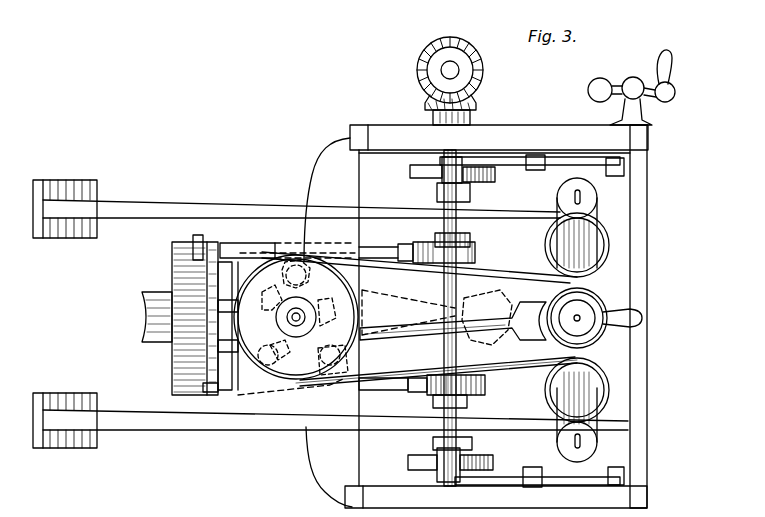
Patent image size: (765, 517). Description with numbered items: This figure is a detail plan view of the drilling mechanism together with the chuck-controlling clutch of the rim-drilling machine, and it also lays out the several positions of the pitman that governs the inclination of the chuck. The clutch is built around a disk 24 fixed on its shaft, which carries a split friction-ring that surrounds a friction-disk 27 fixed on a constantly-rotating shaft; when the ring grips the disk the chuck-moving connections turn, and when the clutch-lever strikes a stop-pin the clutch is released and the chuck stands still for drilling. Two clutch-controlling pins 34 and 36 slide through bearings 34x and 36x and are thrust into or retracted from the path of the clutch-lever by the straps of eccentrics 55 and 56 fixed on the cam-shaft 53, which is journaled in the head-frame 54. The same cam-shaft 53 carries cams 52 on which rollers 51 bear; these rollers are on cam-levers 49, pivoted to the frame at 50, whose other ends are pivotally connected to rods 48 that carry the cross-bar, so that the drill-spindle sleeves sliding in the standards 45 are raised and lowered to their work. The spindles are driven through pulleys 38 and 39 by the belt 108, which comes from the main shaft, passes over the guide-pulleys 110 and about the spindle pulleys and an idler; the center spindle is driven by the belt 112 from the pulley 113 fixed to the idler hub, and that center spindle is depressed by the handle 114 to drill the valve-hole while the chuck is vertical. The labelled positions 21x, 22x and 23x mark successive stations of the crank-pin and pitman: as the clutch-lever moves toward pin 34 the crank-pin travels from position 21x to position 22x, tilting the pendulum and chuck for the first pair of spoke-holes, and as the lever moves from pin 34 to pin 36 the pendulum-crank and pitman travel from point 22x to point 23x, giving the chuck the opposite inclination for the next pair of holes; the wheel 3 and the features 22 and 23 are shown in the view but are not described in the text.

The wheel 3 is at (296, 317).
The crank-pin position 21x is at (300, 275).
The fork arm 22 is at (456, 309).
The crank-pin position 22x is at (333, 376).
The lever (phantom) 23 is at (437, 313).
The crank-pin position 23x is at (268, 400).
The disk 24 is at (192, 348).
The friction-disk 27 is at (176, 372).
The clutch-controlling pin 34 is at (207, 393).
The bearing 34x is at (270, 367).
The clutch-controlling pin 36 is at (205, 250).
The bearing 36x is at (290, 240).
The pulley 38 is at (548, 252).
The pulley 39 is at (548, 398).
The standard 45 is at (618, 233).
The rod 48 is at (625, 172).
The cam-lever 49 is at (513, 152).
The pivot 50 is at (543, 484).
The roller 51 is at (476, 181).
The cam 52 is at (425, 172).
The cam-shaft 53 is at (462, 230).
The head-frame 54 is at (499, 138).
The eccentric 55 is at (476, 258).
The eccentric 56 is at (434, 393).
The belt 108 is at (180, 208).
The guide-pulley 110 is at (82, 178).
The belt 112 is at (442, 268).
The pulley 113 is at (402, 262).
The handle 114 is at (640, 315).